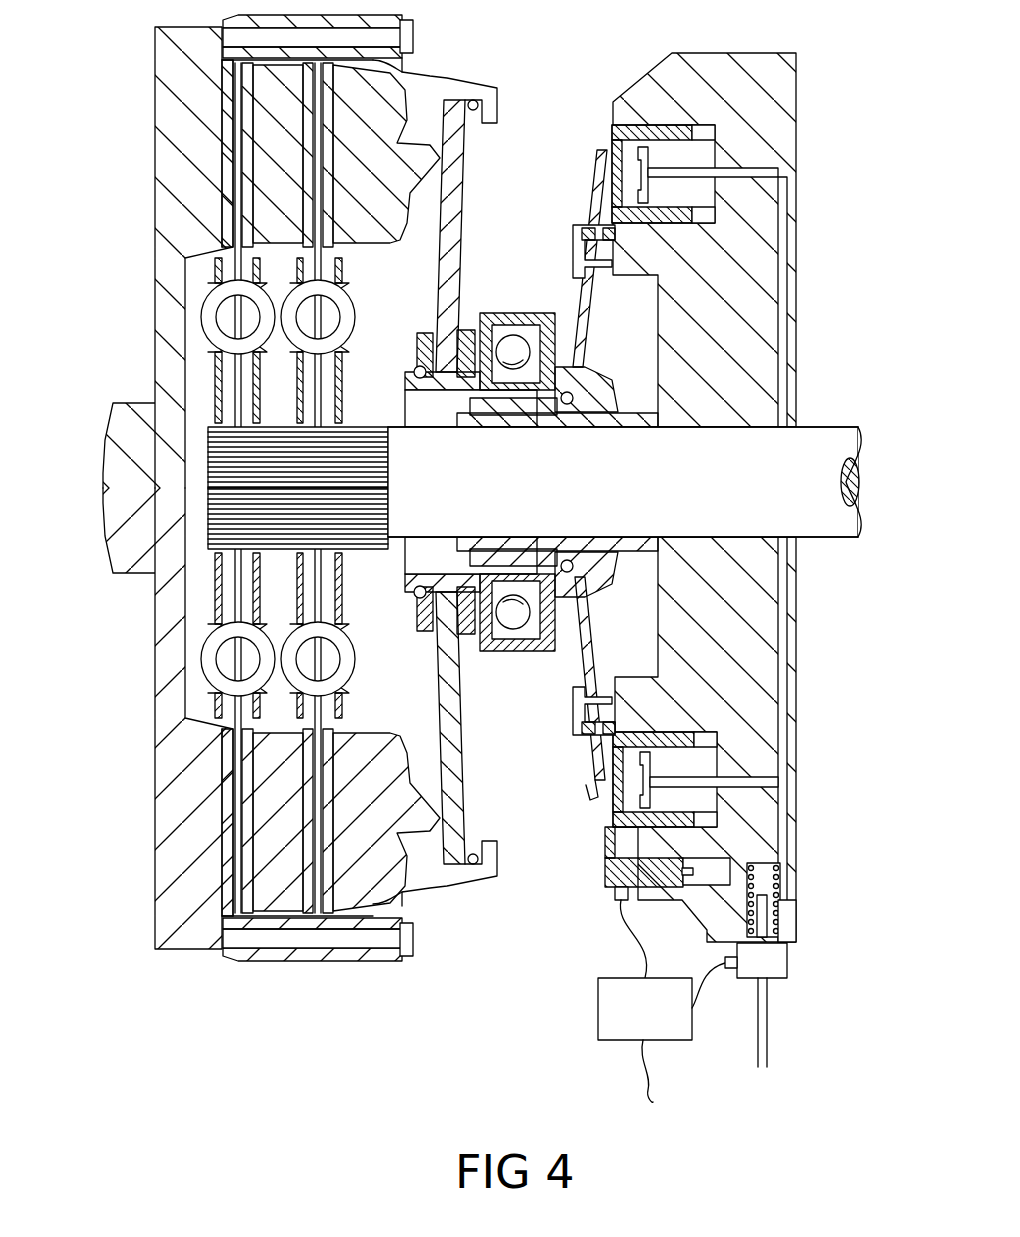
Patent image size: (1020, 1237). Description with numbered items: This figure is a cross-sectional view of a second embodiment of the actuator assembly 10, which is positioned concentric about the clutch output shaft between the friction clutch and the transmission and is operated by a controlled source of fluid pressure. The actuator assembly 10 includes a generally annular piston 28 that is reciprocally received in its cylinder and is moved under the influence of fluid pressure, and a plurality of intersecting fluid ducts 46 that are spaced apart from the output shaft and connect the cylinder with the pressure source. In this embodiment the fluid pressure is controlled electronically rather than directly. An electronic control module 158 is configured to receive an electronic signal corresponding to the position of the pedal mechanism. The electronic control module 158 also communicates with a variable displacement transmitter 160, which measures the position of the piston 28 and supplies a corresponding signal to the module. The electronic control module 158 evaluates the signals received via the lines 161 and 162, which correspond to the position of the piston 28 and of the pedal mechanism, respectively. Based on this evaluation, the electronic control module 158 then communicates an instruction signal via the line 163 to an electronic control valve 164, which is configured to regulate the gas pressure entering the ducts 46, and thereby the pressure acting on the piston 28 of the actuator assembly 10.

The actuator assembly 10 is at (513, 558).
The piston 28 is at (600, 125).
The fluid ducts 46 is at (750, 168).
The electronic control module 158 is at (670, 1025).
The variable displacement transmitter 160 is at (610, 876).
The line 161 is at (630, 944).
The line 162 is at (643, 1067).
The line 163 is at (710, 992).
The electronic control valve 164 is at (770, 963).